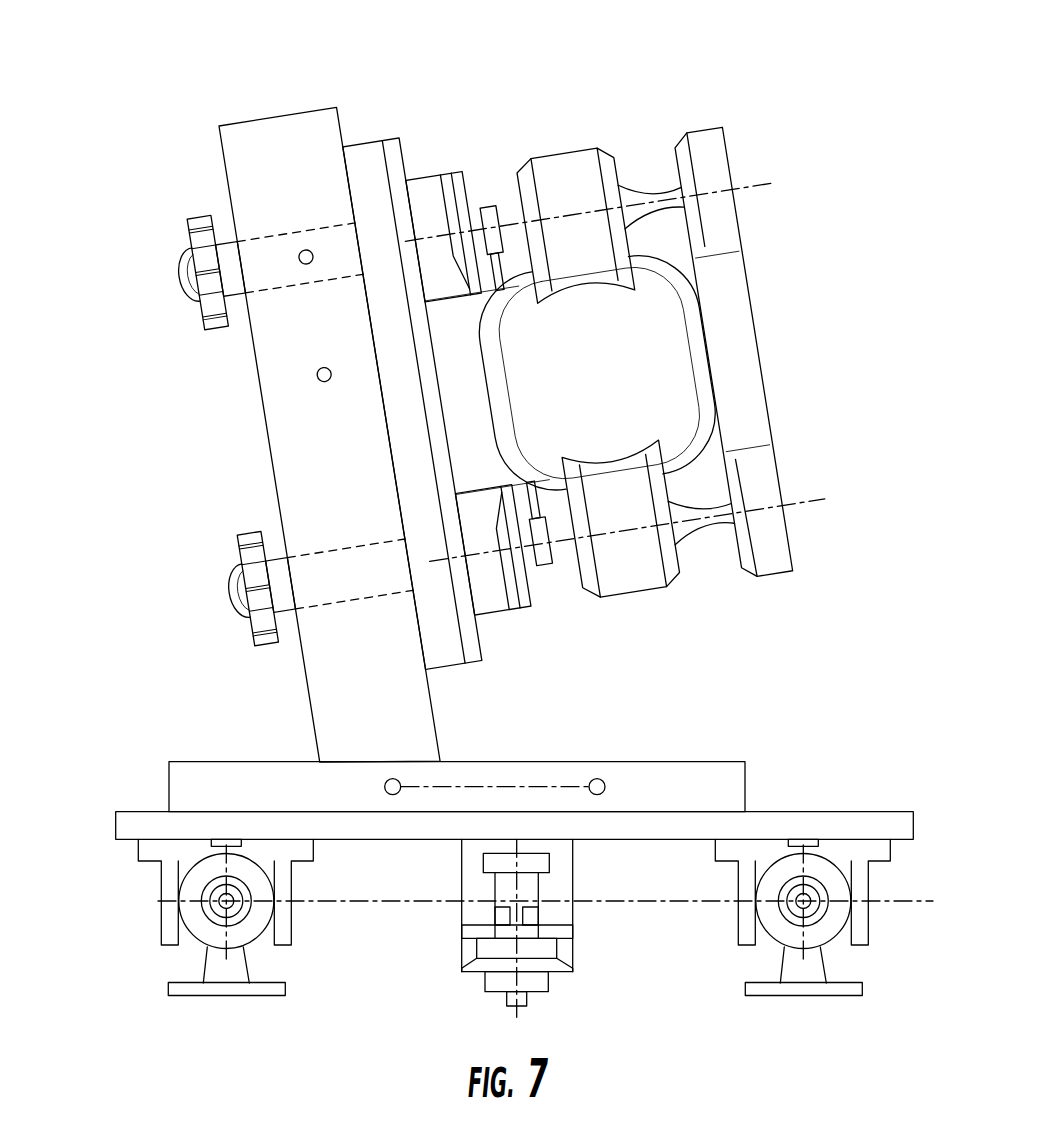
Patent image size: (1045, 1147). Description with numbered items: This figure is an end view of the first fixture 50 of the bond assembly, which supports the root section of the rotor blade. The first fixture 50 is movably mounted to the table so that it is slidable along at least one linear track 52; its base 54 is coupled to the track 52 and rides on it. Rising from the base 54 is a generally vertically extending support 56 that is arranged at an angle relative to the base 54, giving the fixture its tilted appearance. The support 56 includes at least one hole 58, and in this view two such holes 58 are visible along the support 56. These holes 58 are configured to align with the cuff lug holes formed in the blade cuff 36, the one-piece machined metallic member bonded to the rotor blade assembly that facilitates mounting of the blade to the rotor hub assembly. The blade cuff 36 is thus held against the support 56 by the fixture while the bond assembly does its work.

The first fixture 50 is at (143, 60).
The blade cuff 36 is at (570, 207).
The linear track 52 is at (158, 901).
The base 54 is at (832, 811).
The support 56 is at (277, 503).
The hole 58 is at (275, 263).